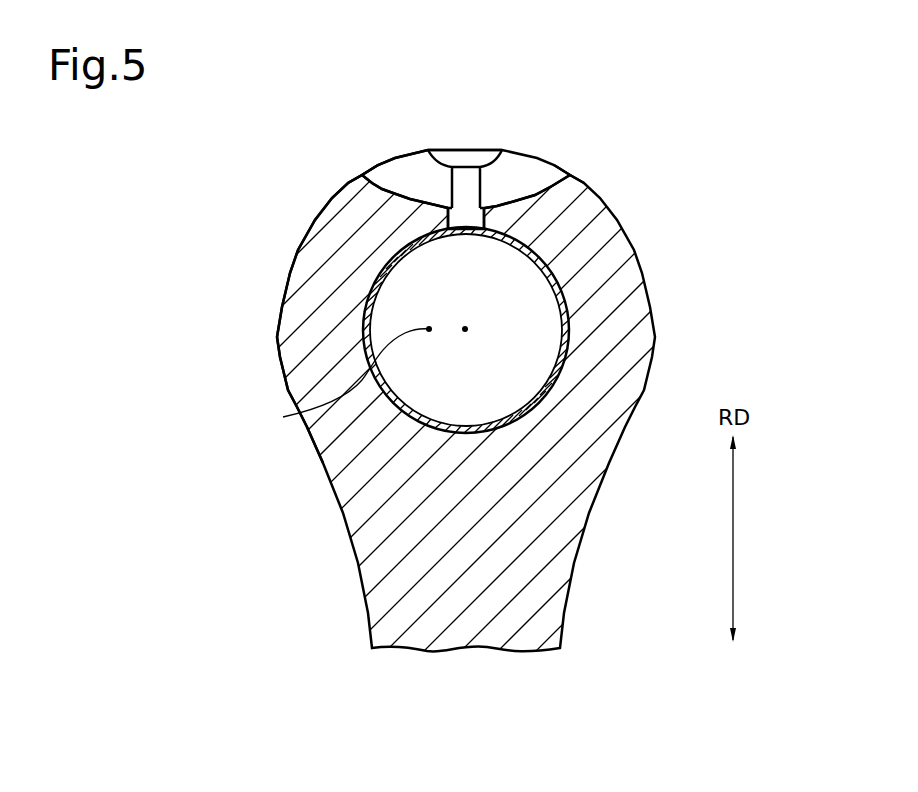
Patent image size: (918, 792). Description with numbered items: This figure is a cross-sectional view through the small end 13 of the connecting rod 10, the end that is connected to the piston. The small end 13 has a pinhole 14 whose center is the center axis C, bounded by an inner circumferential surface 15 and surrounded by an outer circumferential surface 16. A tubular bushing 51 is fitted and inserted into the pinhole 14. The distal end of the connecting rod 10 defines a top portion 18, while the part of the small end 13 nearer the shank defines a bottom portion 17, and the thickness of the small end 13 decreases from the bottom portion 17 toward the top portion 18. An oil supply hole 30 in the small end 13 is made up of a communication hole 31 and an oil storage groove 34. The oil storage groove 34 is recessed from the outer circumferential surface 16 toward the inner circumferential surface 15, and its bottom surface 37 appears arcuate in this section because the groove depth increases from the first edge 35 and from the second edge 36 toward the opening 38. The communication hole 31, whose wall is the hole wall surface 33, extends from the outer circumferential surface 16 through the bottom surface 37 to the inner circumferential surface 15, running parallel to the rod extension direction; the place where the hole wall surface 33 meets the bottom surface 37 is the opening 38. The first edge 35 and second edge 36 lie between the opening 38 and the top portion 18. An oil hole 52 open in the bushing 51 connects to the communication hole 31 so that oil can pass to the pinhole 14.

The connecting rod 10 is at (689, 190).
The small end 13 is at (642, 300).
The pinhole 14 is at (345, 394).
The inner circumferential surface 15 is at (374, 318).
The outer circumferential surface 16 is at (317, 219).
The bottom portion 17 is at (476, 463).
The top portion 18 is at (467, 150).
The oil supply hole 30 is at (566, 133).
The communication hole 31 is at (457, 174).
The hole wall surface 33 is at (470, 212).
The oil storage groove 34 is at (383, 172).
The first edge 35 is at (361, 175).
The second edge 36 is at (572, 176).
The bottom surface 37 is at (402, 190).
The opening 38 is at (483, 212).
The bushing 51 is at (380, 380).
The oil hole 52 is at (484, 228).
The center axis C is at (468, 329).